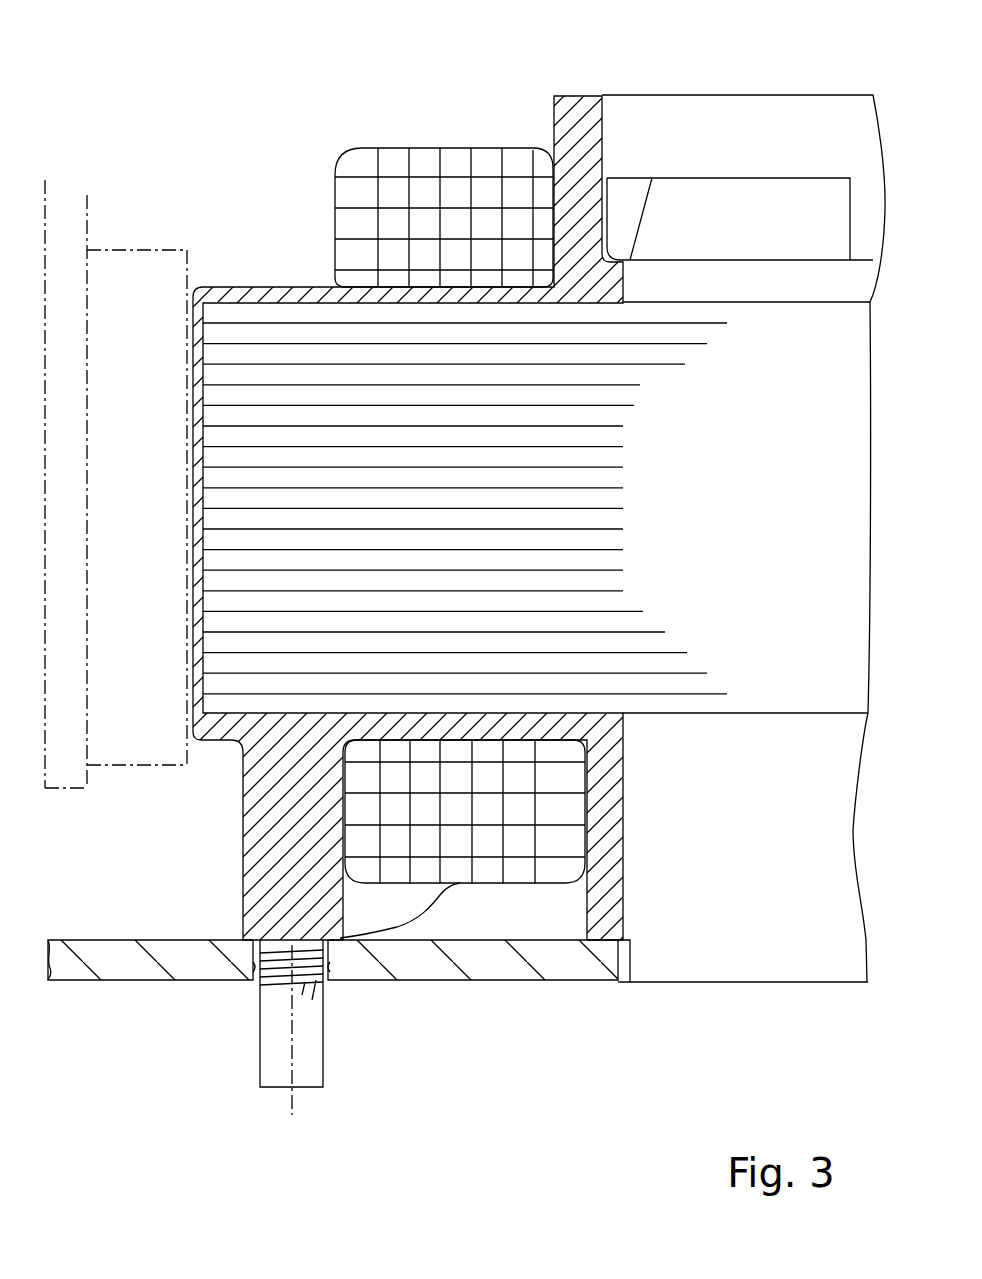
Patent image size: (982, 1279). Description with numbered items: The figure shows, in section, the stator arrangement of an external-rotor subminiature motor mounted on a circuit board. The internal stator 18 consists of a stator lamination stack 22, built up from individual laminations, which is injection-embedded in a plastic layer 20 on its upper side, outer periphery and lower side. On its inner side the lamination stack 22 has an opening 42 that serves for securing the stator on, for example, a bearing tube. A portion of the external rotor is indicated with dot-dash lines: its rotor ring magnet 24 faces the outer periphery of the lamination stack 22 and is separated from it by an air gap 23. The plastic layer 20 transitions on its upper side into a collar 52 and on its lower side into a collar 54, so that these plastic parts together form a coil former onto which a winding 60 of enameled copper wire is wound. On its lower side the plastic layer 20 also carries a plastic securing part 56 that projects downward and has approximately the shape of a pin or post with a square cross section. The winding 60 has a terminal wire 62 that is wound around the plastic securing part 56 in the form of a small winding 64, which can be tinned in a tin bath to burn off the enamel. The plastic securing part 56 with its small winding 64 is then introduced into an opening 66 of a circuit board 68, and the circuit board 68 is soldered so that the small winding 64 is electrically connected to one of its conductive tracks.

The internal stator 18 is at (333, 148).
The plastic layer 20 is at (263, 293).
The stator lamination stack 22 is at (630, 505).
The air gap 23 is at (192, 717).
The rotor ring magnet 24 is at (130, 281).
The opening 42 is at (623, 705).
The collar 52 is at (580, 123).
The collar 54 is at (607, 880).
The plastic securing part 56 is at (277, 1067).
The winding 60 is at (398, 183).
The terminal wire 62 is at (442, 895).
The small winding 64 is at (303, 987).
The opening 66 is at (255, 967).
The circuit board 68 is at (130, 970).